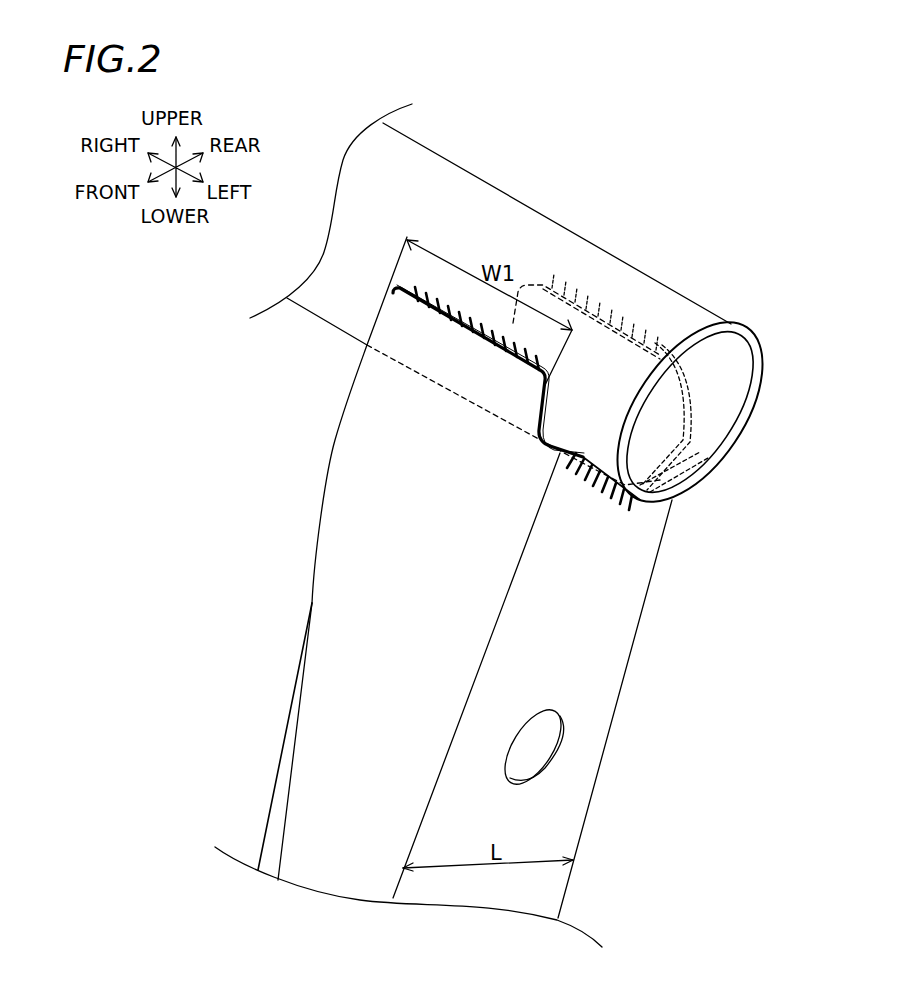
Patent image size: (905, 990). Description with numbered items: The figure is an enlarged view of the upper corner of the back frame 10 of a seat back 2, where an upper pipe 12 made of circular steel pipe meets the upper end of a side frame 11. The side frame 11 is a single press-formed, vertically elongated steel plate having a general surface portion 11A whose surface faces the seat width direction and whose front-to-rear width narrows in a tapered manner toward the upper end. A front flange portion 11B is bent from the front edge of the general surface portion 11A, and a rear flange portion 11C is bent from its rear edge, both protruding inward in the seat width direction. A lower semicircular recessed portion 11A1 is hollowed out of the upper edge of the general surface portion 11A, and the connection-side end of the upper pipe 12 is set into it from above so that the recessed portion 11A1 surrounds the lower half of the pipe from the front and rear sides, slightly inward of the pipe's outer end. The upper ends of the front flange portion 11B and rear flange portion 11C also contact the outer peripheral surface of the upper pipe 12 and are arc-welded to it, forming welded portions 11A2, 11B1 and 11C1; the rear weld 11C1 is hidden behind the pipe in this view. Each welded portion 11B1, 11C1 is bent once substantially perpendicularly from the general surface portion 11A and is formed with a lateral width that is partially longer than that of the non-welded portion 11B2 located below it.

The back frame 10 is at (490, 224).
The seat back 2 is at (632, 200).
The upper pipe 12 is at (527, 225).
The side frame 11 is at (623, 703).
The general surface portion 11A is at (674, 646).
The recessed portion 11A1 is at (660, 480).
The welded portion 11A2 is at (606, 503).
The front flange portion 11B is at (374, 582).
The welded portion 11B1 is at (460, 347).
The non-welded portion 11B2 is at (347, 817).
The rear flange portion 11C is at (625, 376).
The welded portion 11C1 is at (637, 307).